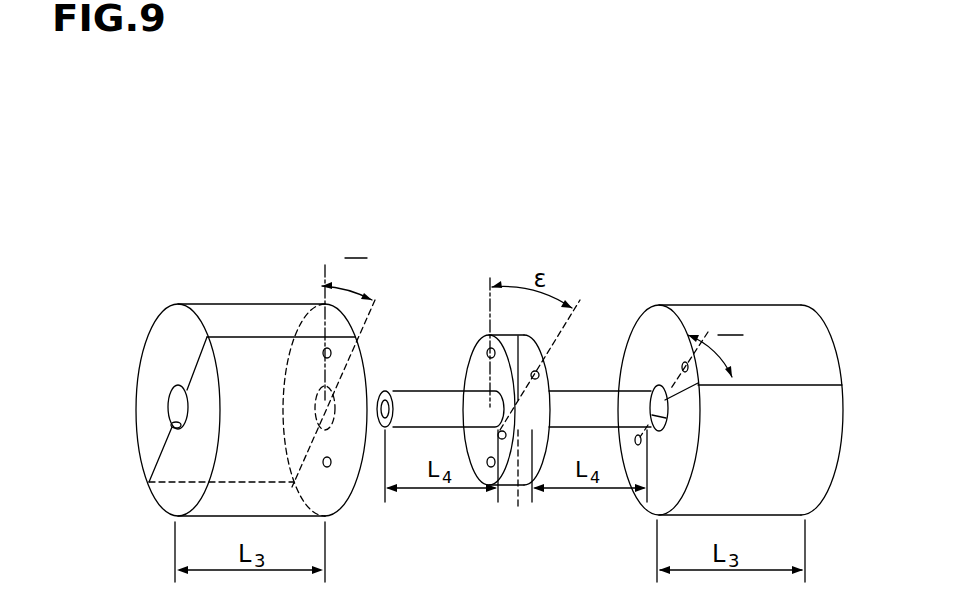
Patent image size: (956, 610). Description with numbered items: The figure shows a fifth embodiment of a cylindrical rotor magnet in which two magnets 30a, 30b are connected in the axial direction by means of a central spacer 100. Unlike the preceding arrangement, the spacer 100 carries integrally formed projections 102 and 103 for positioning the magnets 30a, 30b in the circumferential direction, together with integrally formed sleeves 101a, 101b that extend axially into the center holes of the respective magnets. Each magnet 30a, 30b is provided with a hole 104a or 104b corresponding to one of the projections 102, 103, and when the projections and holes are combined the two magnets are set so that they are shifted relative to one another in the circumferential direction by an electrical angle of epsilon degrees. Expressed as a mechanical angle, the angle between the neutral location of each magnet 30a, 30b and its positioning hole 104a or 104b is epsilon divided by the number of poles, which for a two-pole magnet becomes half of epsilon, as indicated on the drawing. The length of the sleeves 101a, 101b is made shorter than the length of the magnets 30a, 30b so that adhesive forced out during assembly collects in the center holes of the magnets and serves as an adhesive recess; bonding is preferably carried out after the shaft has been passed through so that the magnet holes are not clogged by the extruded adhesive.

The magnet 30a is at (222, 304).
The magnet 30b is at (770, 305).
The spacer 100 is at (522, 353).
The sleeve 101a is at (405, 392).
The sleeve 101b is at (610, 393).
The projection 102 is at (487, 353).
The projection 103 is at (540, 377).
The hole 104a is at (284, 348).
The hole 104b is at (662, 386).